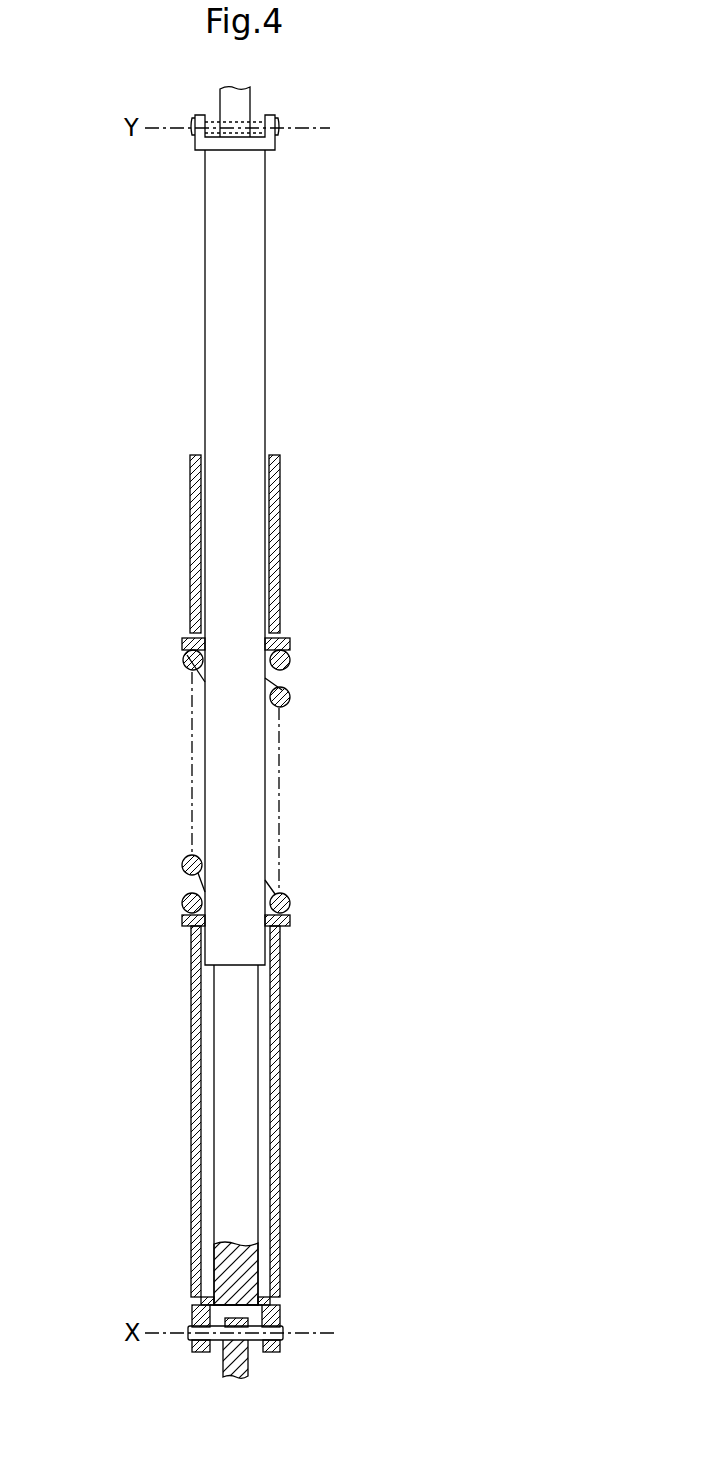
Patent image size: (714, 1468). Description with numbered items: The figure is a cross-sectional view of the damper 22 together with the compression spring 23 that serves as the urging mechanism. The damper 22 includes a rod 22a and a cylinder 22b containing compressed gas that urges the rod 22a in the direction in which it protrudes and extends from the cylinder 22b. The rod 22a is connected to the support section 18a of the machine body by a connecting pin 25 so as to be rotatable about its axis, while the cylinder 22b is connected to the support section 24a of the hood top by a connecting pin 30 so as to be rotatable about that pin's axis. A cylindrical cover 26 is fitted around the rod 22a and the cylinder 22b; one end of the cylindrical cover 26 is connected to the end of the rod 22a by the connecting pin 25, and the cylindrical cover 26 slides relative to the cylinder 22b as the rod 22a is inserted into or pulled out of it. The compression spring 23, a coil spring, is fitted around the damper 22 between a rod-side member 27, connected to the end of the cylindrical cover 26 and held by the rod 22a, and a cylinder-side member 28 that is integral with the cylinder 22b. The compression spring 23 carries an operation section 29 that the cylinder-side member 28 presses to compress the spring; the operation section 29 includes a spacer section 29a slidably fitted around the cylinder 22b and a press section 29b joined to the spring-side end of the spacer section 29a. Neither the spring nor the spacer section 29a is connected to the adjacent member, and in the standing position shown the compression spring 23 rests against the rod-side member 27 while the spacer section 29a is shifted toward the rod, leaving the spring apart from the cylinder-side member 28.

The support section 24a is at (246, 99).
The cylinder-side member 28 is at (216, 147).
The connecting pin 30 is at (280, 130).
The cylinder 22b is at (250, 408).
The operation section 29 is at (152, 552).
The spacer section 29a is at (193, 603).
The press section 29b is at (186, 643).
The compression spring 23 is at (288, 690).
The rod-side member 27 is at (292, 918).
The cylindrical cover 26 is at (282, 1185).
The rod 22a is at (240, 1063).
The connecting pin 25 is at (255, 1320).
The support section 18a is at (250, 1360).
The damper 22 is at (412, 709).